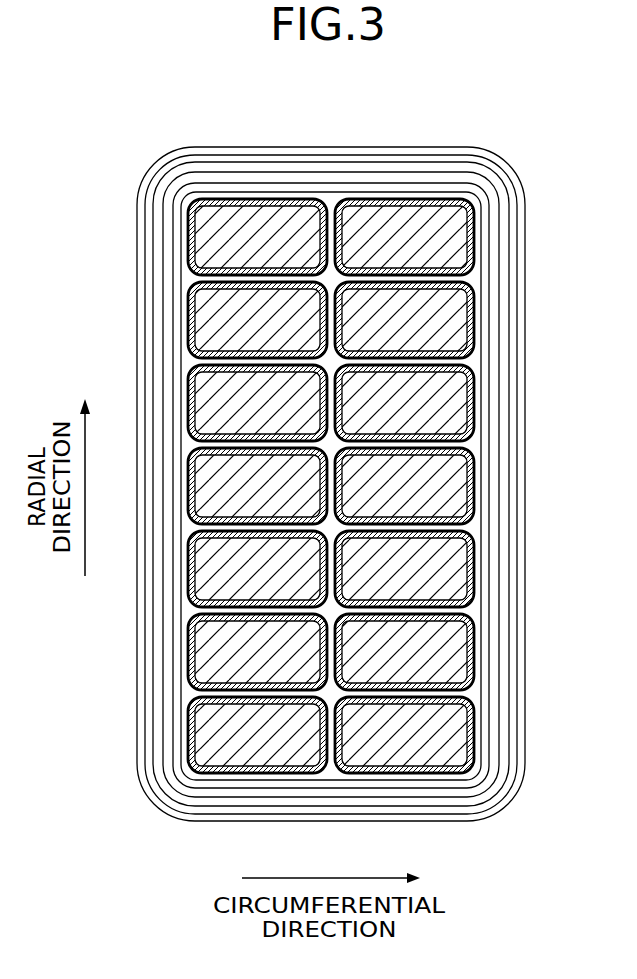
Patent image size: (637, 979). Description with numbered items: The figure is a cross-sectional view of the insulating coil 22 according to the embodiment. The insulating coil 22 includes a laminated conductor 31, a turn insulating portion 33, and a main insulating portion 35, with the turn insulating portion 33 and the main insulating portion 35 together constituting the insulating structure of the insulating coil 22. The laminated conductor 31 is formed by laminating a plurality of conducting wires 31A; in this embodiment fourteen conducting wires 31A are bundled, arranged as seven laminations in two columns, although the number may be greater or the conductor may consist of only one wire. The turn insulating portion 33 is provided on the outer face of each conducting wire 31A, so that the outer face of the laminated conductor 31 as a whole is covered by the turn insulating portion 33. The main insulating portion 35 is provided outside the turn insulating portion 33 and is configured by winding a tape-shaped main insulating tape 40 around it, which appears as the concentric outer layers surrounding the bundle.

The insulating coil 22 is at (531, 125).
The main insulating portion 35 is at (425, 148).
The main insulating tape 40 is at (492, 268).
The turn insulating portion 33 is at (476, 393).
The conducting wire 31A is at (437, 487).
The laminated conductor 31 is at (488, 652).